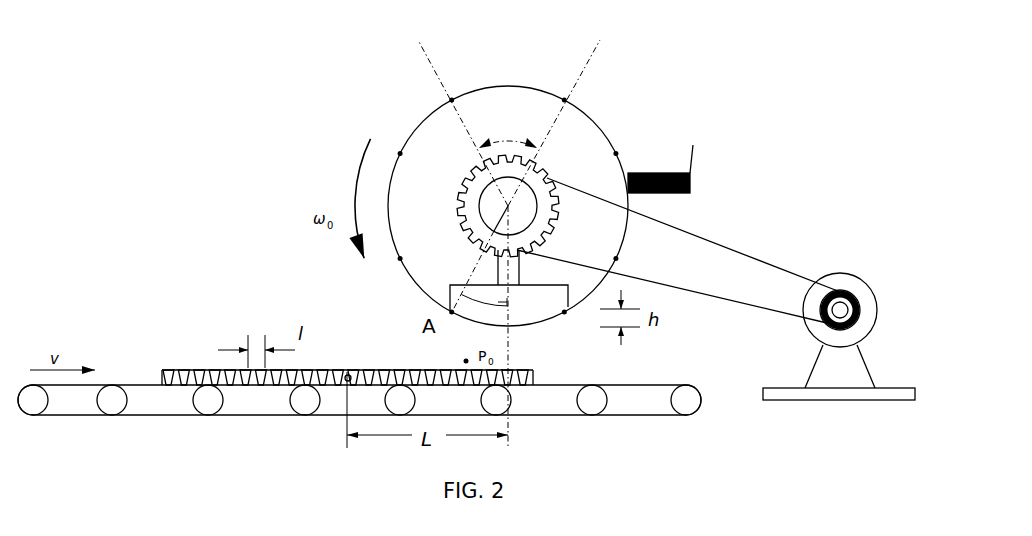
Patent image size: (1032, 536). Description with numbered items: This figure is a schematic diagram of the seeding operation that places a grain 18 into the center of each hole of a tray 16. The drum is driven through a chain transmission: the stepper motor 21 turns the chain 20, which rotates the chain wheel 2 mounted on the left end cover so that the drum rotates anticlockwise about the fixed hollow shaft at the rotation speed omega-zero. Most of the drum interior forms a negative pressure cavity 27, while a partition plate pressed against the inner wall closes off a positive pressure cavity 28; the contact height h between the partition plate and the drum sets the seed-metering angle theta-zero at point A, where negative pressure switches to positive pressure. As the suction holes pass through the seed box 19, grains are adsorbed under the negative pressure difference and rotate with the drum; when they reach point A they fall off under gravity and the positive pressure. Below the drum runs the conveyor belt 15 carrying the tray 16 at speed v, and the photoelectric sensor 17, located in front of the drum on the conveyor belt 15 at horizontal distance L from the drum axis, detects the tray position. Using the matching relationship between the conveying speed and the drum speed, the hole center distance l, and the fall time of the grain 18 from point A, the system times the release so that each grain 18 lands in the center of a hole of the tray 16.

The chain wheel 2 is at (515, 158).
The conveyor belt 15 is at (112, 385).
The tray 16 is at (207, 385).
The photoelectric sensor 17 is at (349, 377).
The grain 18 is at (452, 100).
The seed box 19 is at (655, 167).
The chain 20 is at (677, 228).
The stepper motor 21 is at (870, 287).
The negative pressure cavity 27 is at (432, 138).
The positive pressure cavity 28 is at (536, 305).